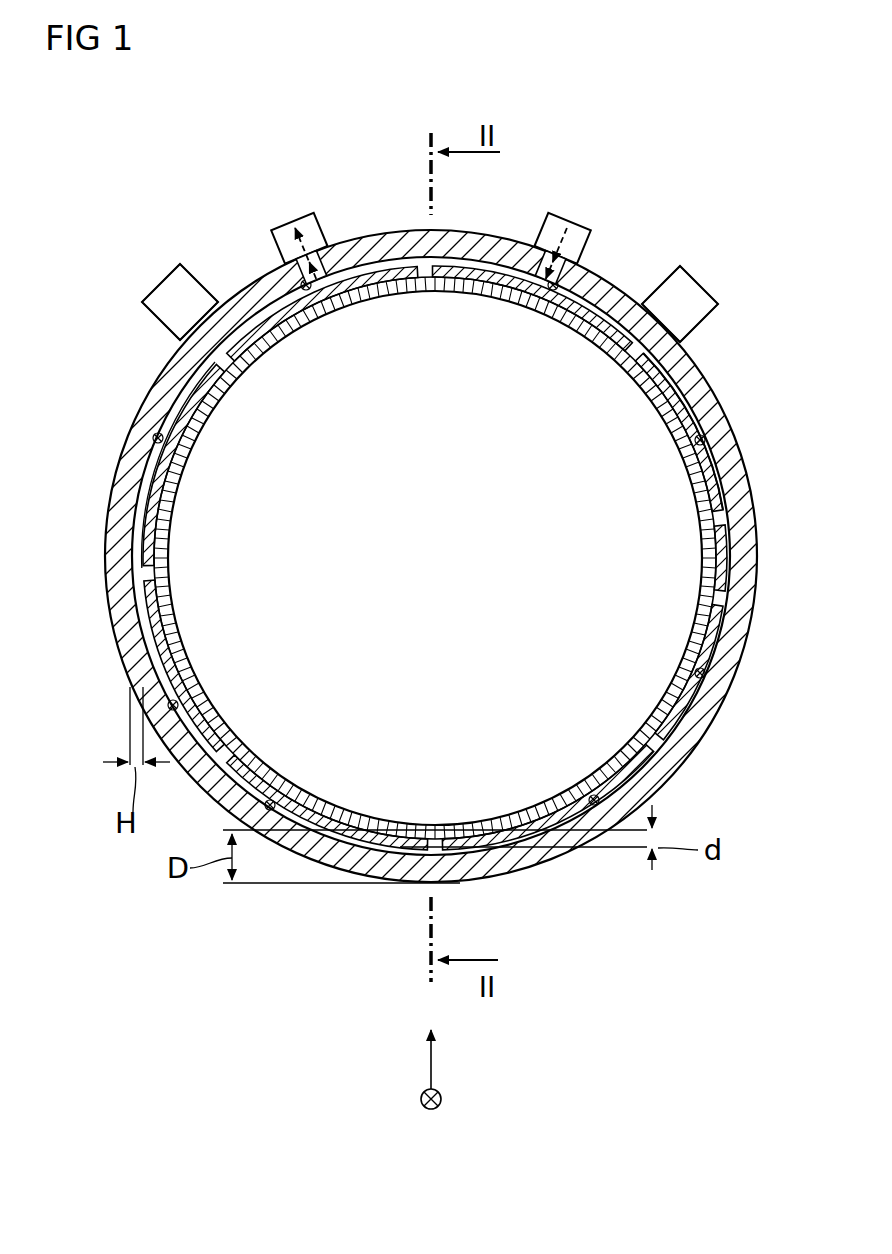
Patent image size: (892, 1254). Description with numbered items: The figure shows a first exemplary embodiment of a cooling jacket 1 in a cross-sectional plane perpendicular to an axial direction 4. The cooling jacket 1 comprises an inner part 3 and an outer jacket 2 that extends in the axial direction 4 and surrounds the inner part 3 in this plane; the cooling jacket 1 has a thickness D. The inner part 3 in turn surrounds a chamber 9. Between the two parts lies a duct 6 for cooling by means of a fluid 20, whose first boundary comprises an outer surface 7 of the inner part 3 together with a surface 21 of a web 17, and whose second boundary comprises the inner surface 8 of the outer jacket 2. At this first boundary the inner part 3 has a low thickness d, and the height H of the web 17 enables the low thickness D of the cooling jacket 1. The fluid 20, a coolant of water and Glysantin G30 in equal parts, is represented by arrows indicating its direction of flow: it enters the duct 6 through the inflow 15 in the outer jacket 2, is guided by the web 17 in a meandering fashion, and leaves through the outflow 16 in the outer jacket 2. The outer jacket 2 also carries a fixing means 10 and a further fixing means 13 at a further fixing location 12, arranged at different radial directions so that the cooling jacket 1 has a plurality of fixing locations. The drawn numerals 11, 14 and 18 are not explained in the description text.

The cooling jacket 1 is at (394, 115).
The outer jacket 2 is at (382, 240).
The inner part 3 is at (484, 276).
The axial direction 4 is at (442, 1100).
The duct 6 is at (688, 410).
The outer surface of the inner part 7 is at (692, 366).
The inner surface of the outer jacket 8 is at (720, 507).
The chamber 9 is at (286, 368).
The fixing means 10 is at (168, 262).
The sensor unit 11 is at (146, 274).
The further fixing location 12 is at (720, 273).
The further fixing means 13 is at (688, 270).
The bearing pad 14 is at (130, 420).
The inflow 15 is at (582, 233).
The outflow 16 is at (272, 230).
The web 17 is at (205, 340).
The direction of gravity 18 is at (432, 1063).
The fluid 20 is at (298, 238).
The surface of the web 21 is at (718, 590).